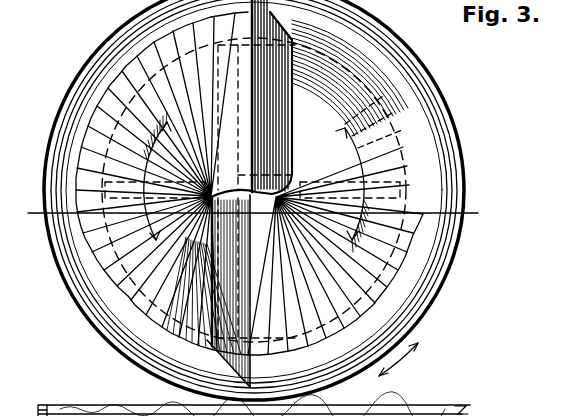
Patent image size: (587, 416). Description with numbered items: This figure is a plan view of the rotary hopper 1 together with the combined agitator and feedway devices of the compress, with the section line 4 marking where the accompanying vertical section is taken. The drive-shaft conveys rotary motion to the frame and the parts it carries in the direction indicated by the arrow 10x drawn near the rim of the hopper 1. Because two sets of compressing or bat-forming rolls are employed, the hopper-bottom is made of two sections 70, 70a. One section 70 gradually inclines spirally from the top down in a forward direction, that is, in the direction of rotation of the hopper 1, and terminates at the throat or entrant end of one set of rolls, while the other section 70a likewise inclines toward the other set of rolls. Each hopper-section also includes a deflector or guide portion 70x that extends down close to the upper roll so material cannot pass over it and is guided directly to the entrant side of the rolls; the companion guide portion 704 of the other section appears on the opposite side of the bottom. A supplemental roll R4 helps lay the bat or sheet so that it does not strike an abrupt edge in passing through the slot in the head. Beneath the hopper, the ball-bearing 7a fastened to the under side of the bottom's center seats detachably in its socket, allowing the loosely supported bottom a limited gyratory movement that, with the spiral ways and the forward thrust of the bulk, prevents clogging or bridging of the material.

The hopper 1 is at (458, 274).
The section line 4 is at (251, 202).
The hopper-bottom section 70 is at (178, 84).
The hopper-bottom section 70a is at (350, 78).
The deflector or guide portion 70x is at (233, 291).
The upper blade 704 is at (253, 98).
The supplemental roll R4 is at (226, 137).
The arrow 10x is at (395, 369).
The ball-bearing 7a is at (288, 410).